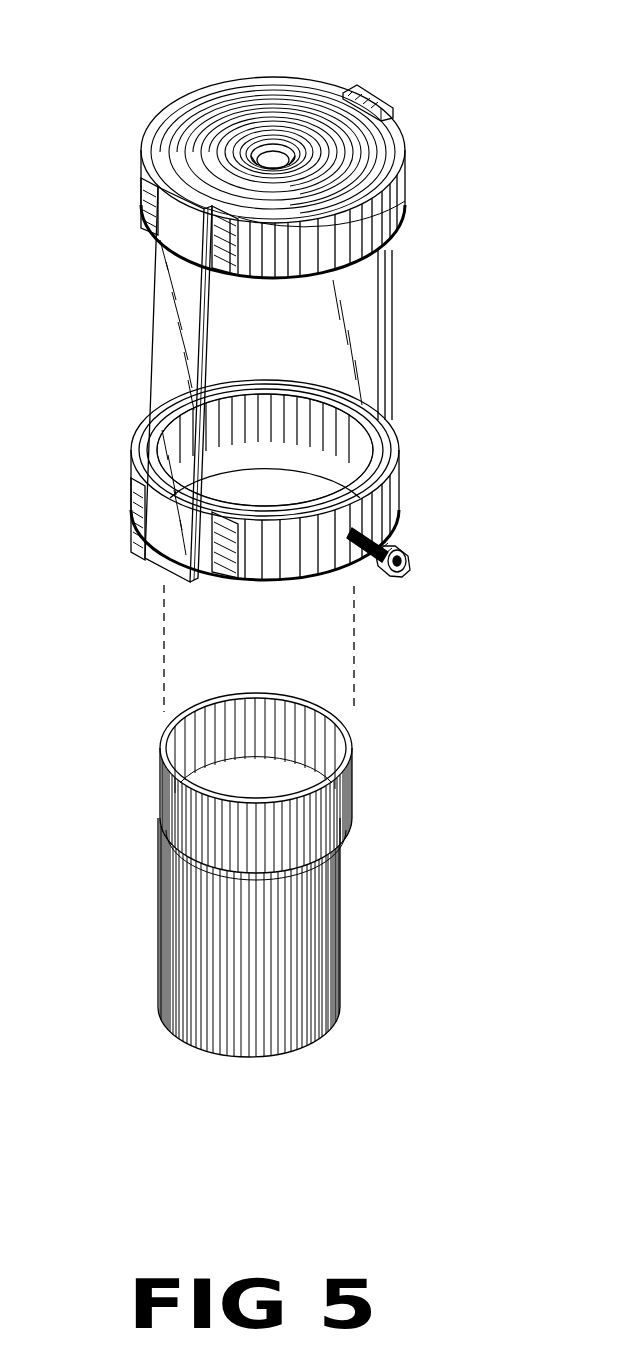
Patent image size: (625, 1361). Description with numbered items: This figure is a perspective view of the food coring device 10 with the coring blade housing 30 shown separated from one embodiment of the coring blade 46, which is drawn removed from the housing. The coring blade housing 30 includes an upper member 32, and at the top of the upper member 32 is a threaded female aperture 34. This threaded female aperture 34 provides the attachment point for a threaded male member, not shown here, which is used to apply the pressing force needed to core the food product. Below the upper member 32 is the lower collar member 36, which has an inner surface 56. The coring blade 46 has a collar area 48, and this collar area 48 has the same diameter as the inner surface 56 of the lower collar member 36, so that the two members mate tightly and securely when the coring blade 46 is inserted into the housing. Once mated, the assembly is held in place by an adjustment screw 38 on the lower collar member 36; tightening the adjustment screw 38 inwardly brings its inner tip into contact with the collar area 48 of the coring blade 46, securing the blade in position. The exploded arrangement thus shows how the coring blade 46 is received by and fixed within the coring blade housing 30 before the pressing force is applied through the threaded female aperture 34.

The assembly 10 is at (452, 337).
The coring blade housing 30 is at (392, 214).
The upper member 32 is at (167, 124).
The threaded female aperture 34 is at (271, 158).
The lower collar member 36 is at (387, 503).
The adjustment screw 38 is at (411, 557).
The coring blade 46 is at (312, 988).
The collar area 48 is at (283, 826).
The inner surface 56 is at (252, 432).